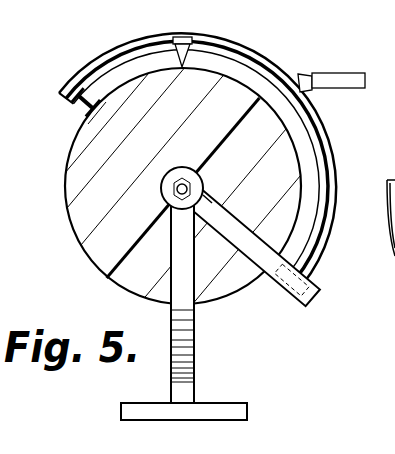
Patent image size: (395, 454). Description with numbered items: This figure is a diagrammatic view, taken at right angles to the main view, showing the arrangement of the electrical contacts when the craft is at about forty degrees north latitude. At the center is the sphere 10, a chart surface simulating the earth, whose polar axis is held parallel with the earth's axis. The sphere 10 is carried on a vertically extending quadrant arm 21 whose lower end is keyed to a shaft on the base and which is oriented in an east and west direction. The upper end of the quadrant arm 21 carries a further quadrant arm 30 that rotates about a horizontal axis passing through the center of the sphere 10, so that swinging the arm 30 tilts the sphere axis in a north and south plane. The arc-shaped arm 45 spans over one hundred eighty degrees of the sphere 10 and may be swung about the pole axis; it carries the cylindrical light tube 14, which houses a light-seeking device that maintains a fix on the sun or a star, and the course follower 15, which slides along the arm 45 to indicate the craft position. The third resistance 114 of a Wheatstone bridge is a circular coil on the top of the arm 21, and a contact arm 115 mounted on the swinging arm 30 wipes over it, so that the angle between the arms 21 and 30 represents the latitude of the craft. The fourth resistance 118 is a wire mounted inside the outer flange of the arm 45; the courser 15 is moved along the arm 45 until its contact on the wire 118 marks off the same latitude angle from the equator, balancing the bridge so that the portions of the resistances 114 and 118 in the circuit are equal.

The sphere 10 is at (68, 210).
The light tube 14 is at (338, 76).
The course follower 15 is at (192, 36).
The quadrant arm 21 is at (195, 325).
The quadrant arm 30 is at (270, 237).
The arm 45 is at (352, 139).
The third resistance 114 is at (190, 162).
The contact arm 115 is at (214, 204).
The fourth resistance 118 is at (92, 78).